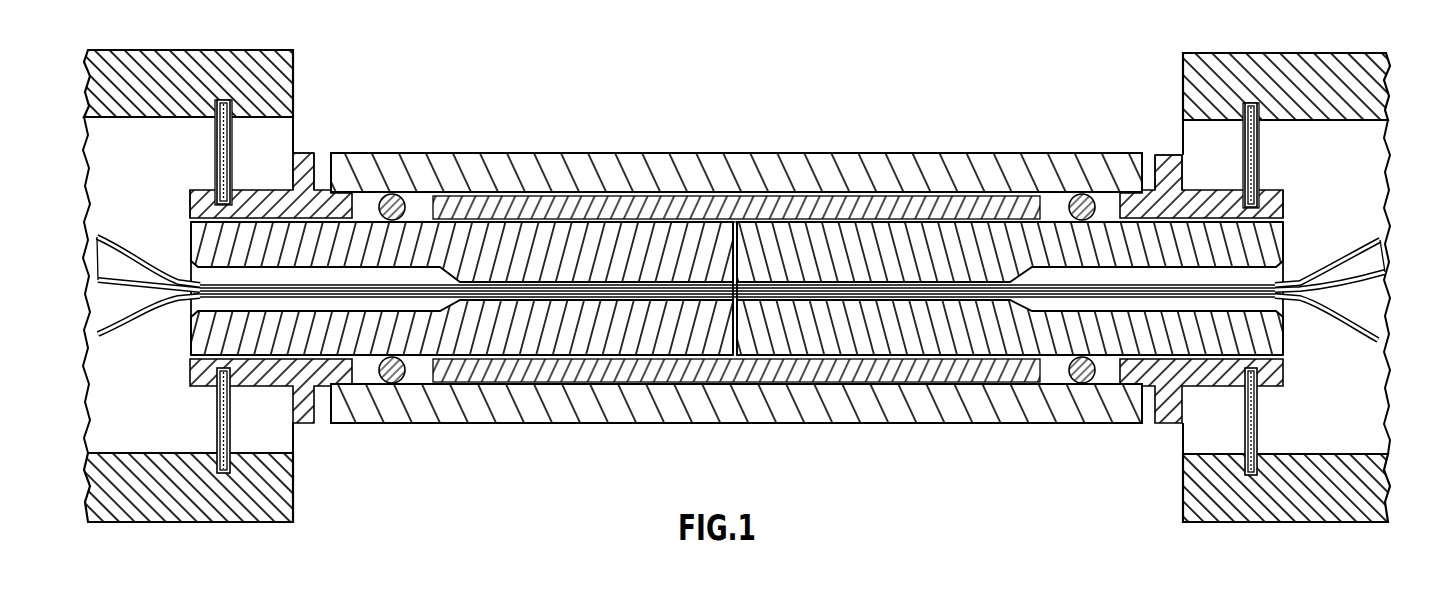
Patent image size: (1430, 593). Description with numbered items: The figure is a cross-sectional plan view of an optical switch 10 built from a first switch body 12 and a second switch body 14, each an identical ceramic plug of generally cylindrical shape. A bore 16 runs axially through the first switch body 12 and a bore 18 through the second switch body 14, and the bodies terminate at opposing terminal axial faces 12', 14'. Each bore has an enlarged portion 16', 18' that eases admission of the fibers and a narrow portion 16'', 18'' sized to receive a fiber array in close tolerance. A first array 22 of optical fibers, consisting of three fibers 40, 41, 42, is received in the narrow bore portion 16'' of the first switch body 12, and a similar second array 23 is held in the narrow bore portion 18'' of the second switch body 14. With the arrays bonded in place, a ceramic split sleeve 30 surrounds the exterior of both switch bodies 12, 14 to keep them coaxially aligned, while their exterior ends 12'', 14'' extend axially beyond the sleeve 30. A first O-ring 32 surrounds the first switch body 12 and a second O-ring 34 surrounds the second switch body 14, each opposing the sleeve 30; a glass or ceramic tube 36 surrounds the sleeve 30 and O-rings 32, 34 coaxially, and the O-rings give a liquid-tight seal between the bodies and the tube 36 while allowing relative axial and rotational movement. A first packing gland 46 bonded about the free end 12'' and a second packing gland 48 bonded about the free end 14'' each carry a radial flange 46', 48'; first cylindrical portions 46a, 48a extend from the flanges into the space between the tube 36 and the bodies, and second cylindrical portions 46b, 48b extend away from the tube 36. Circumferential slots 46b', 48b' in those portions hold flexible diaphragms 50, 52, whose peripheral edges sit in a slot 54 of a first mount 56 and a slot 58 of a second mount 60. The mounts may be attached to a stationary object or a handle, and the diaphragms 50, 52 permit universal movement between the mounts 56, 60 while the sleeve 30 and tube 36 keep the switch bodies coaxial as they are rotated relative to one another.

The optical switch 10 is at (480, 130).
The first switch body 12 is at (434, 286).
The terminal axial face of first switch body 12' is at (725, 234).
The exterior end of first switch body 12'' is at (162, 299).
The second switch body 14 is at (1039, 288).
The terminal axial face of second switch body 14' is at (769, 234).
The exterior end of second switch body 14'' is at (1308, 288).
The bore of first switch body 16 is at (319, 274).
The enlarged bore portion of first switch body 16' is at (161, 302).
The narrow bore portion of first switch body 16'' is at (596, 269).
The bore of second switch body 18 is at (1154, 274).
The enlarged bore portion of second switch body 18' is at (1227, 277).
The narrow bore portion of second switch body 18'' is at (873, 269).
The first array of optical fibers 22 is at (114, 234).
The second array of optical fibers 23 is at (1348, 248).
The sleeve 30 is at (658, 202).
The first O-ring 32 is at (401, 194).
The second O-ring 34 is at (1080, 194).
The tube 36 is at (958, 165).
The optical fiber 40 is at (108, 320).
The optical fiber 41 is at (100, 245).
The optical fiber 42 is at (105, 285).
The first packing gland 46 is at (271, 287).
The radial flange of first packing gland 46' is at (320, 120).
The first cylindrical portion of first packing gland 46a is at (324, 190).
The second cylindrical portion of first packing gland 46b is at (178, 184).
The circumferential slot of first packing gland 46b' is at (229, 154).
The second packing gland 48 is at (1201, 278).
The radial flange of second packing gland 48' is at (1161, 136).
The first cylindrical portion of second packing gland 48a is at (1148, 190).
The second cylindrical portion of second packing gland 48b is at (1322, 198).
The circumferential slot of second packing gland 48b' is at (1254, 172).
The first flexible diaphragm 50 is at (233, 137).
The second flexible diaphragm 52 is at (1260, 140).
The slot of first mount 54 is at (240, 108).
The first mount 56 is at (159, 63).
The slot of second mount 58 is at (1263, 116).
The second mount 60 is at (1235, 63).